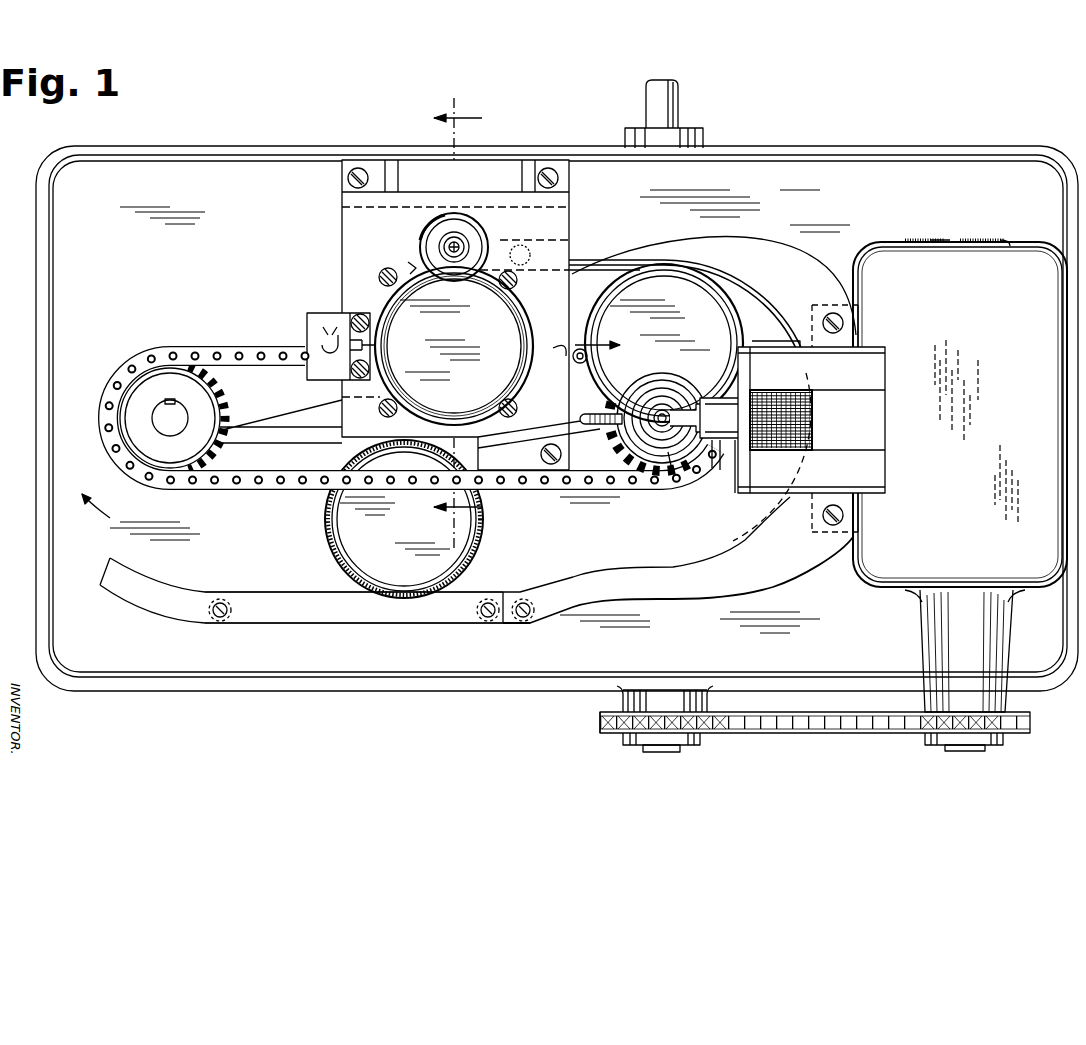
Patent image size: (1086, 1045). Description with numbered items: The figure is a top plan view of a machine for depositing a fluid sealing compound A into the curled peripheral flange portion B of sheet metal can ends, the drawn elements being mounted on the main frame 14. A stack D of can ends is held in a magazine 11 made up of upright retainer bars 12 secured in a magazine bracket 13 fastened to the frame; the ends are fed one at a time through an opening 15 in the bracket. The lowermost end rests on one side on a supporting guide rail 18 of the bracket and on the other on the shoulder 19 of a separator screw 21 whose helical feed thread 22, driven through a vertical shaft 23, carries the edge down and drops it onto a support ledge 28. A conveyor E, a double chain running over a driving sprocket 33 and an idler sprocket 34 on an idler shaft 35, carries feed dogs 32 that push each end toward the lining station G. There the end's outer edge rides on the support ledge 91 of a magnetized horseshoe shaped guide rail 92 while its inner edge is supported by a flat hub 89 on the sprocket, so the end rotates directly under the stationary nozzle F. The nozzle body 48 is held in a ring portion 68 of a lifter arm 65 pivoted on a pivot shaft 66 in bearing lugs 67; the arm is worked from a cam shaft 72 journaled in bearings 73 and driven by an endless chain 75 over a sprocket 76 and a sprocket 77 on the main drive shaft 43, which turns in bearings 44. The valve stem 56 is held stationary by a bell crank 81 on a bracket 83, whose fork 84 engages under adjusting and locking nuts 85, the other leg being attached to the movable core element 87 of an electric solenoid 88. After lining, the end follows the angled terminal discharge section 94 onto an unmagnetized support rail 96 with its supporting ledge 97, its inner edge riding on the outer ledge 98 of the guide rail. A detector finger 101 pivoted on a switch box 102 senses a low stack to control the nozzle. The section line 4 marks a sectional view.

The frame 14 is at (258, 182).
The magazine bracket 13 is at (342, 223).
The upright retainer bars 12 is at (516, 408).
The magazine 11 is at (512, 324).
The opening 15 is at (518, 378).
The separator screw 21 is at (462, 238).
The shoulder 19 is at (470, 242).
The helical feed thread 22 is at (436, 233).
The vertical shaft 23 is at (451, 255).
The support ledge 28 is at (410, 264).
The switch box 102 is at (307, 325).
The detector finger 101 is at (375, 344).
The outer ledge 98 is at (326, 447).
The idler shaft 35 is at (165, 418).
The idler sprocket 34 is at (232, 400).
The feed dogs 32 is at (490, 478).
The supporting ledge 97 is at (318, 596).
The support rail 96 is at (354, 607).
The terminal discharge section 94 is at (560, 592).
The support ledge 91 is at (590, 270).
The horseshoe shaped guide rail 92 is at (665, 249).
The hub 89 is at (630, 446).
The adjusting and locking nuts 85 is at (653, 412).
The valve stem 56 is at (665, 412).
The fork 84 is at (676, 410).
The bell crank 81 is at (703, 412).
The driving sprocket 33 is at (627, 453).
The nozzle body 48 is at (658, 447).
The ring portion 68 is at (675, 462).
The lifter arm 65 is at (713, 470).
The movable core element 87 is at (737, 462).
The supporting guide rail 18 is at (573, 428).
The cam shaft 72 is at (972, 752).
The bearings 73 is at (945, 628).
The pivot shaft 66 is at (768, 505).
The bearing lugs 67 is at (755, 497).
The bracket 83 is at (822, 404).
The electric solenoid 88 is at (814, 424).
The bearings 44 is at (660, 690).
The main drive shaft 43 is at (655, 752).
The endless chain 75 is at (812, 734).
The sprocket 76 is at (942, 736).
The sprocket 77 is at (612, 735).
The section line 4 is at (475, 325).
The fluid sealing compound A is at (332, 550).
The curled peripheral flange portion B is at (690, 264).
The stack D is at (393, 320).
The conveyor E is at (274, 352).
The lining nozzle F is at (658, 452).
The lining station G is at (772, 282).